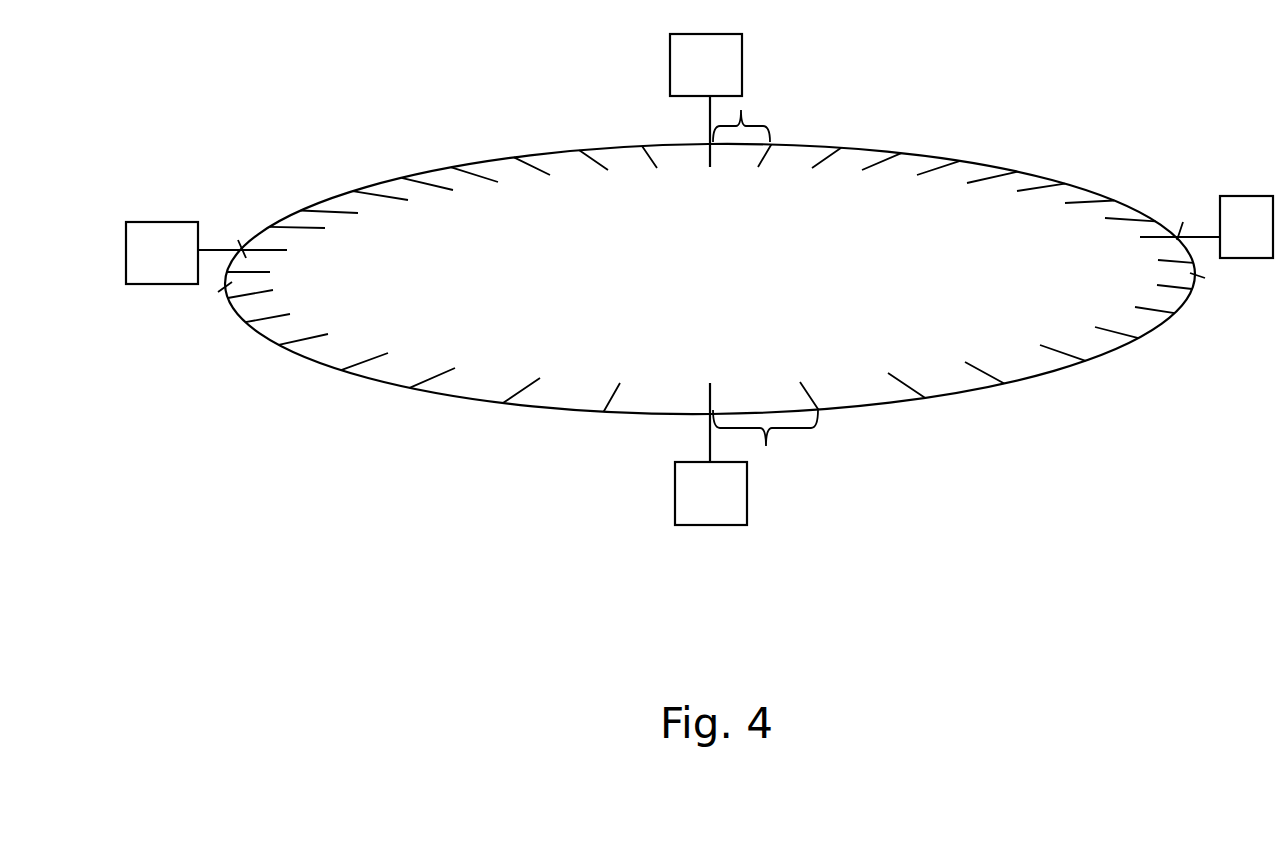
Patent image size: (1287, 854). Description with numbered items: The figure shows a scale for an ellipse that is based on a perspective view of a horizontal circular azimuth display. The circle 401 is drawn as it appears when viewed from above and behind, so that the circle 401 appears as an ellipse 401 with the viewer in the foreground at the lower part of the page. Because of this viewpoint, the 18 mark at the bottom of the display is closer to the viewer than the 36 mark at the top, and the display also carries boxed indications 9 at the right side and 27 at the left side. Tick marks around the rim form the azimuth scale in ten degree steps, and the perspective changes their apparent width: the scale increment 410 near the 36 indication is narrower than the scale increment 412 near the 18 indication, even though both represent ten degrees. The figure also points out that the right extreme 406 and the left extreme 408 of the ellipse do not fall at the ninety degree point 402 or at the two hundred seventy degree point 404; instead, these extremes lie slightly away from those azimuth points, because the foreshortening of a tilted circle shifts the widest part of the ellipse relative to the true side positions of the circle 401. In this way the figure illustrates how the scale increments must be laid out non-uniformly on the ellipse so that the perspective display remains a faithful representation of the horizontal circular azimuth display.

The circle 401 is at (493, 160).
The ninety degree point 402 is at (1183, 222).
The two hundred seventy degree point 404 is at (238, 240).
The right extreme of the ellipse 406 is at (1205, 278).
The left extreme of the ellipse 408 is at (218, 292).
The scale increment near the 36 indication 410 is at (754, 107).
The scale increment near the 18 indication 412 is at (765, 448).
The 36 mark 36 is at (706, 100).
The position index 27 is at (206, 253).
The 18 mark 18 is at (711, 454).
The position index 9 is at (1206, 227).